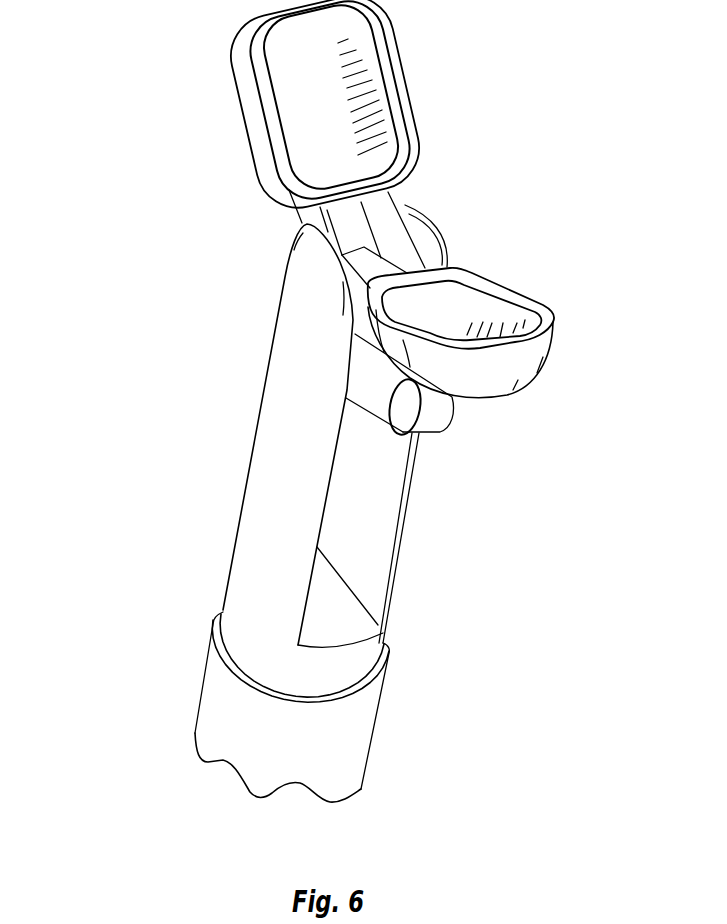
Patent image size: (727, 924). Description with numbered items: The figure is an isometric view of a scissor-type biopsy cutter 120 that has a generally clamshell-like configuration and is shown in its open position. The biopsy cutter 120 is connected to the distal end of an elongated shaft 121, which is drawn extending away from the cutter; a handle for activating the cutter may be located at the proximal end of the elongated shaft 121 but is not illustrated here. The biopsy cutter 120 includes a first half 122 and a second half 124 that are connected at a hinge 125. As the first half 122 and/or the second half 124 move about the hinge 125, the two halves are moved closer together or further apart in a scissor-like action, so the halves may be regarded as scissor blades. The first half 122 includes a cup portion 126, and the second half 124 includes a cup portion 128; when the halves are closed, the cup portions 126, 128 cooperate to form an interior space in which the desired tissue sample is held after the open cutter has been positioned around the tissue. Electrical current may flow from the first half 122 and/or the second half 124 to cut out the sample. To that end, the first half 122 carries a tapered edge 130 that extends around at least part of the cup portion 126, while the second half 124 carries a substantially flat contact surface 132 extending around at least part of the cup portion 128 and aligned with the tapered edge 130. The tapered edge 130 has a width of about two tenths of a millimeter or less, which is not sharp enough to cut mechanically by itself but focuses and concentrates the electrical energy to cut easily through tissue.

The biopsy cutter 120 is at (127, 332).
The elongated shaft 121 is at (372, 723).
The first half 122 is at (243, 130).
The second half 124 is at (513, 418).
The hinge 125 is at (433, 223).
The cup portion 126 is at (356, 120).
The cup portion 128 is at (482, 302).
The tapered edge 130 is at (383, 45).
The contact surface 132 is at (552, 322).